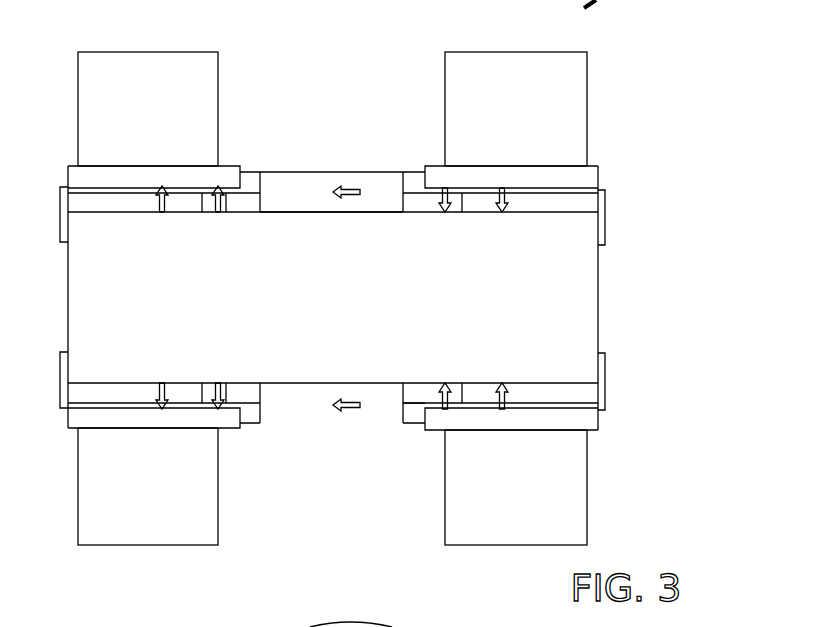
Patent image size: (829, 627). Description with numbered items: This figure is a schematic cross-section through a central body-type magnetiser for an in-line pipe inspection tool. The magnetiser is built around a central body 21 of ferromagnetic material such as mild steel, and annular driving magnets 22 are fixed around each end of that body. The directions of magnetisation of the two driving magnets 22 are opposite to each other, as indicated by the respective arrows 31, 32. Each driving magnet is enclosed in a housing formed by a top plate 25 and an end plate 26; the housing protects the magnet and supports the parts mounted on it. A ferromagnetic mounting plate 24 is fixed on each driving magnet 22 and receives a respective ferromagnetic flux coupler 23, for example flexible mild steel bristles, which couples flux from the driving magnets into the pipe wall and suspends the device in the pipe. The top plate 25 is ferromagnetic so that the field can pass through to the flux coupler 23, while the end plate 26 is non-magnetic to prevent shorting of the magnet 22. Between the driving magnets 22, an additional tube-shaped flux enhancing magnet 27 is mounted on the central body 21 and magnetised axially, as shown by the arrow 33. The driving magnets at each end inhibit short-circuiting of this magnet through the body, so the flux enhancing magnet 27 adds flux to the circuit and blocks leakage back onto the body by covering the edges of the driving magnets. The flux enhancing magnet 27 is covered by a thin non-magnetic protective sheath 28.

The central body 21 is at (583, 268).
The annular driving magnets 22 is at (455, 395).
The ferromagnetic flux coupler 23 is at (570, 97).
The ferromagnetic mounting plate 24 is at (585, 178).
The top plate 25 is at (418, 420).
The end plate 26 is at (607, 200).
The flux enhancing magnet 27 is at (318, 188).
The protective sheath 28 is at (350, 172).
The arrow 31 is at (152, 215).
The arrow 32 is at (490, 205).
The arrow 33 is at (362, 200).